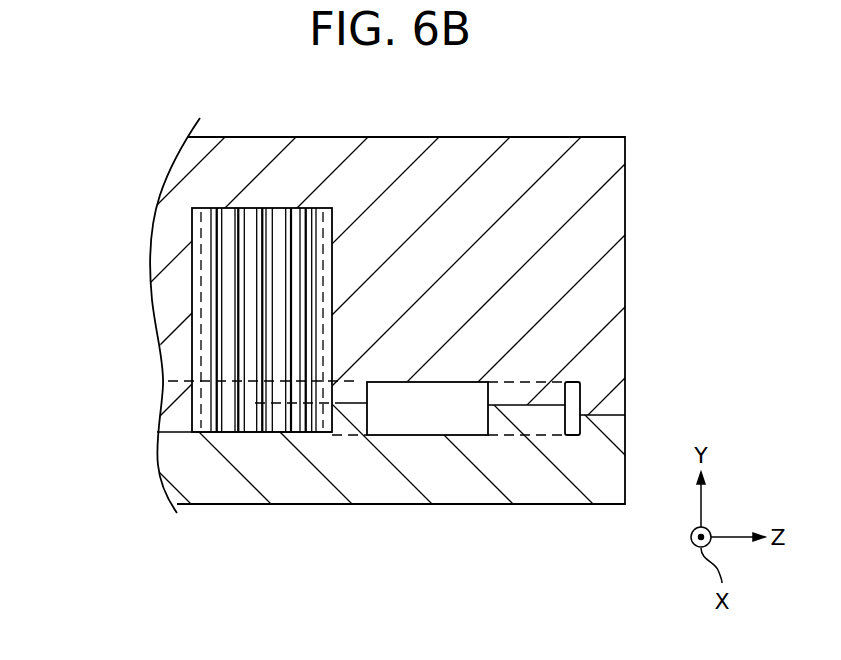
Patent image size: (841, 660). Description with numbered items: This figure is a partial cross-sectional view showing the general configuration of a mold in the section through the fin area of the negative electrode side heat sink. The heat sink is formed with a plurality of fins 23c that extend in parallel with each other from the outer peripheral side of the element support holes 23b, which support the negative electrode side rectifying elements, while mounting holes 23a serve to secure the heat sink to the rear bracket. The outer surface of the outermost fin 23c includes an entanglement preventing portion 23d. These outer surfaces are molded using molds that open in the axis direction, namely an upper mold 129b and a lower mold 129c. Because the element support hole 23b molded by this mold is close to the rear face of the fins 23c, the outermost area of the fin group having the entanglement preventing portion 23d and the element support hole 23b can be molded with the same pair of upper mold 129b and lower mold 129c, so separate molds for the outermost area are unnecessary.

The mounting hole 23a is at (565, 397).
The element support hole 23b is at (367, 390).
The fin 23c is at (248, 222).
The entanglement preventing portion 23d is at (333, 227).
The upper mold 129b is at (518, 131).
The lower mold 129c is at (528, 505).